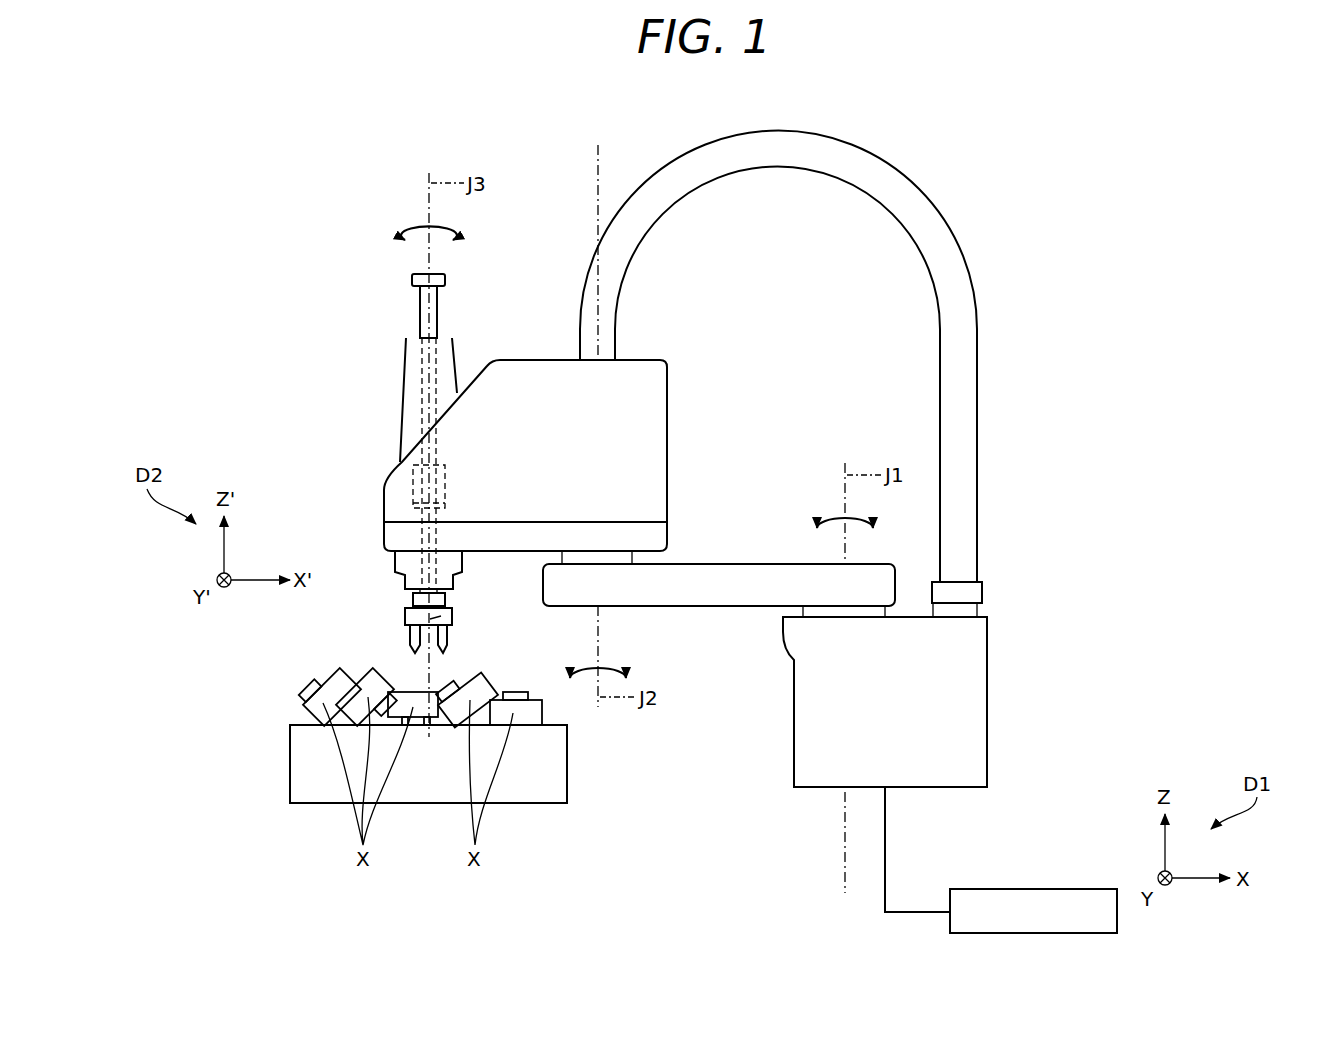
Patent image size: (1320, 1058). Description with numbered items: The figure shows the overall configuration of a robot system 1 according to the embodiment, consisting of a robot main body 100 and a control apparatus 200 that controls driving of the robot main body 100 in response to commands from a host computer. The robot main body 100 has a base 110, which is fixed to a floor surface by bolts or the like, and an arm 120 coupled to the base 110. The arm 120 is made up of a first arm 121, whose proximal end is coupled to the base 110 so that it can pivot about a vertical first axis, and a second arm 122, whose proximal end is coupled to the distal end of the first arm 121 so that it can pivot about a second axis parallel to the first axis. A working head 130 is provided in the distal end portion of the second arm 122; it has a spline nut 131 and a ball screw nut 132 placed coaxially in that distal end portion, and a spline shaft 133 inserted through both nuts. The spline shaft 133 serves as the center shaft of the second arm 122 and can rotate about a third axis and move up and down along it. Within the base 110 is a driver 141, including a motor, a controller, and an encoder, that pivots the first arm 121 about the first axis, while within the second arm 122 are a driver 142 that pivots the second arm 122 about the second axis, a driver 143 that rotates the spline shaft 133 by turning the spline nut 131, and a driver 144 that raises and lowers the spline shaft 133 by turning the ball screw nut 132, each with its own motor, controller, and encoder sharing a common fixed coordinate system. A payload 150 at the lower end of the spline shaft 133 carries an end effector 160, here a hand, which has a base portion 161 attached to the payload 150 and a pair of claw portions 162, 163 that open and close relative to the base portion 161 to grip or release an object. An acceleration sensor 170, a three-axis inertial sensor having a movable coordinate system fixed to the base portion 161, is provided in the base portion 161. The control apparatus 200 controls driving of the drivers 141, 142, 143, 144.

The robot system 1 is at (207, 166).
The robot main body 100 is at (925, 181).
The base 110 is at (976, 697).
The arm 120 is at (639, 500).
The first arm 121 is at (735, 580).
The second arm 122 is at (518, 384).
The working head 130 is at (384, 432).
The spline nut 131 is at (412, 503).
The ball screw nut 132 is at (420, 478).
The spline shaft 133 is at (427, 314).
The driver 141 is at (847, 633).
The driver 142 is at (625, 497).
The driver 143 is at (625, 465).
The driver 144 is at (617, 433).
The payload 150 is at (413, 598).
The end effector 160 is at (412, 617).
The base portion 161 is at (453, 615).
The claw portion 162 is at (448, 637).
The claw portion 163 is at (410, 638).
The acceleration sensor 170 is at (449, 608).
The control apparatus 200 is at (1037, 888).